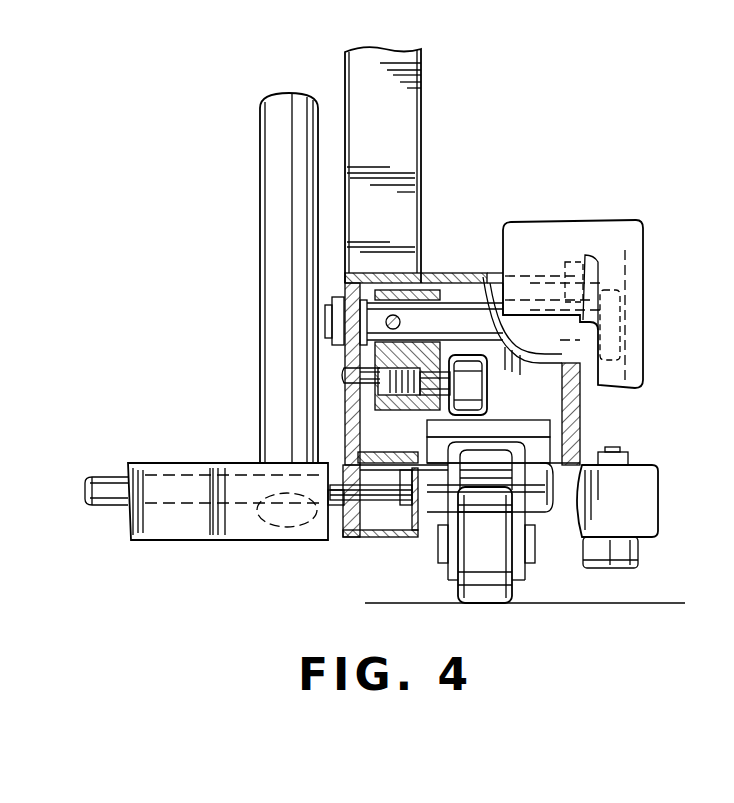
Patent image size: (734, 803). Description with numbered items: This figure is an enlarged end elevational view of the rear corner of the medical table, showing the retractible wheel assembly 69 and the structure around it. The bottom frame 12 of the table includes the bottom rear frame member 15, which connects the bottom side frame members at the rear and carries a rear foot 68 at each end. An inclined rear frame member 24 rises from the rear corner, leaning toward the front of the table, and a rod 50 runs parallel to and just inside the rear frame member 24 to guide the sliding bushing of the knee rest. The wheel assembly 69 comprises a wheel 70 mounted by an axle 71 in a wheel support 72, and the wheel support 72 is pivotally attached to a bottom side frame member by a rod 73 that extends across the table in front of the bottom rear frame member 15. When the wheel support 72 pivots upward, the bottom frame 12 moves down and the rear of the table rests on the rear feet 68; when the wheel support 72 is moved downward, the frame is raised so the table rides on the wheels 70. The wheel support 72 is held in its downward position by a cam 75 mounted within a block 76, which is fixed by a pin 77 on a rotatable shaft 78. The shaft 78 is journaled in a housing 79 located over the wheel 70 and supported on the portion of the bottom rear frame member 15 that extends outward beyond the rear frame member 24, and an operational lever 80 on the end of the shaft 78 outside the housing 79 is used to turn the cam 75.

The bottom frame 12 is at (233, 464).
The bottom rear frame member 15 is at (218, 520).
The inclined rear frame member 24 is at (398, 133).
The rod 50 is at (262, 305).
The rear foot 68 is at (625, 553).
The retractible wheel assembly 69 is at (422, 571).
The wheel 70 is at (500, 588).
The axle 71 is at (533, 548).
The wheel support 72 is at (540, 428).
The rod 73 is at (110, 478).
The cam 75 is at (470, 392).
The block 76 is at (428, 298).
The pin 77 is at (391, 316).
The rotatable shaft 78 is at (465, 312).
The housing 79 is at (571, 403).
The operational lever 80 is at (553, 237).